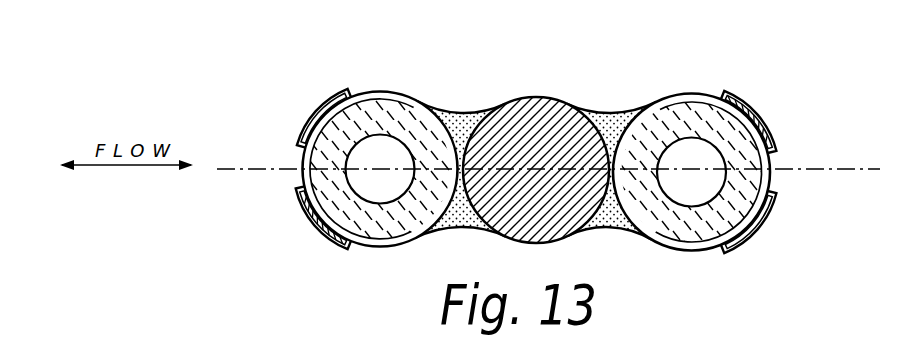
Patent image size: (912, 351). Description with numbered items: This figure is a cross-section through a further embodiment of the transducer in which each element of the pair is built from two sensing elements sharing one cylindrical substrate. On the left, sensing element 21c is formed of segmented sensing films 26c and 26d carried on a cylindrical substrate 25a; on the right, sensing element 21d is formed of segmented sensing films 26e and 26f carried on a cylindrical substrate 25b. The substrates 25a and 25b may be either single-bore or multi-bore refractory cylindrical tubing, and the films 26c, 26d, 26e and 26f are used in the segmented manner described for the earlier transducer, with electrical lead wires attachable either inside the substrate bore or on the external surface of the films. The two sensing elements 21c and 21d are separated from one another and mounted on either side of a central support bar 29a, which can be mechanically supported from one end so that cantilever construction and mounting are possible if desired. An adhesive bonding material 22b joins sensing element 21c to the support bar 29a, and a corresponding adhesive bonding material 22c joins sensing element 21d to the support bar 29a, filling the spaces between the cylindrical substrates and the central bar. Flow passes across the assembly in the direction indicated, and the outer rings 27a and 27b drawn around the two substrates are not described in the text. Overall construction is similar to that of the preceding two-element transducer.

The sensing element 21c is at (326, 166).
The sensing element 21d is at (736, 167).
The adhesive bonding material 22b is at (458, 128).
The adhesive bonding material 22c is at (608, 130).
The cylindrical substrate 25a is at (378, 238).
The cylindrical substrate 25b is at (680, 233).
The segmented sensing film 26c is at (323, 112).
The segmented sensing film 26d is at (330, 238).
The segmented sensing film 26e is at (752, 114).
The segmented sensing film 26f is at (742, 232).
The first housing ring 27a is at (395, 91).
The second housing ring 27b is at (691, 94).
The central support bar 29a is at (536, 115).